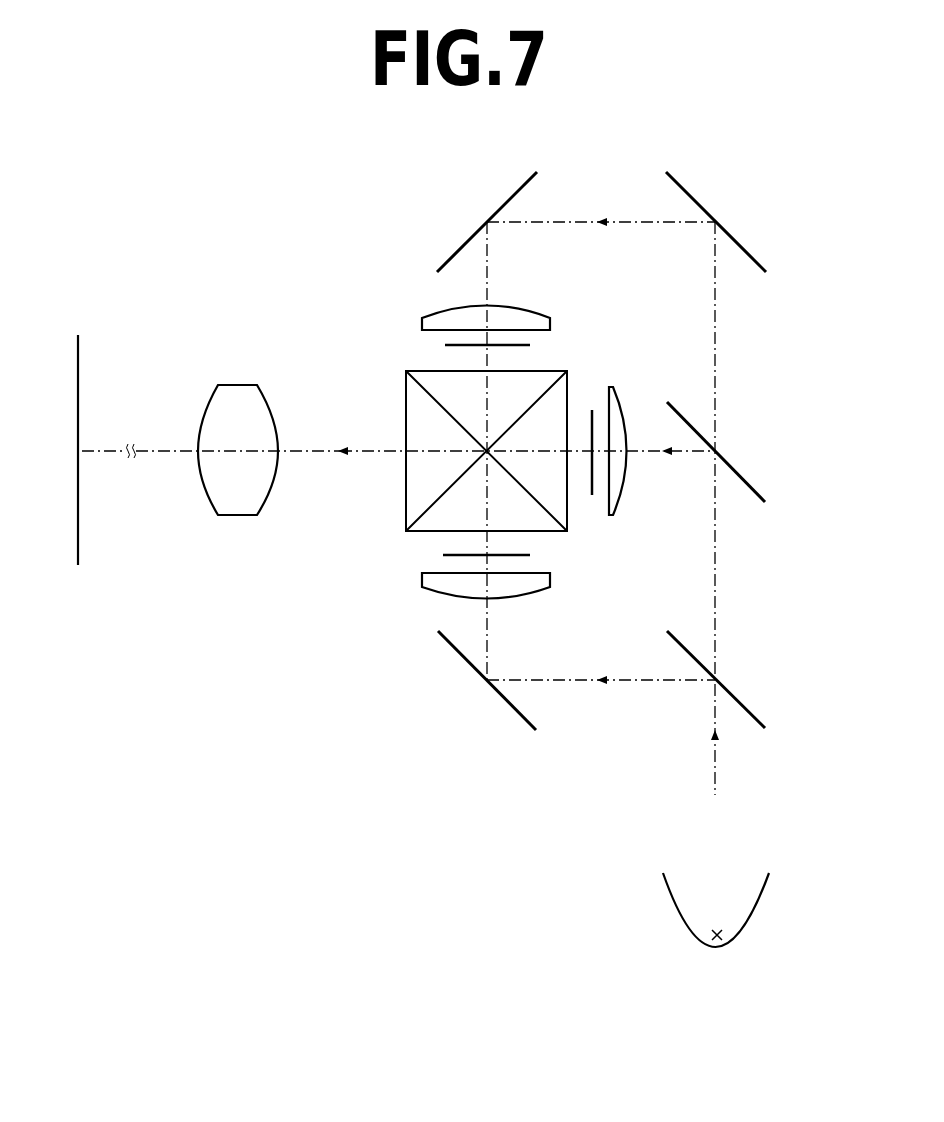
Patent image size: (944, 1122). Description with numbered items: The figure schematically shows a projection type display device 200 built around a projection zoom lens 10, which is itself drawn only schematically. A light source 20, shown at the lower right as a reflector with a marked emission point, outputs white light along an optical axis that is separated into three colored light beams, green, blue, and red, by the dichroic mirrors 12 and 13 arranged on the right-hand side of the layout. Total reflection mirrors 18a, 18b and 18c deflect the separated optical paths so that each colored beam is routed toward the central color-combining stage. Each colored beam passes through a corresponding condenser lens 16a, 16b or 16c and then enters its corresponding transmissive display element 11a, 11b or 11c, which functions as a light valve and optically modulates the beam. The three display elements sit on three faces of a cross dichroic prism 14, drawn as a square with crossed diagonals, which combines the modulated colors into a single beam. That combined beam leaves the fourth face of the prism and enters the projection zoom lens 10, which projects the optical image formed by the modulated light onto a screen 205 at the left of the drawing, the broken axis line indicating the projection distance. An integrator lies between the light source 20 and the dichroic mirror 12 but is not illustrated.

The projection type display device 200 is at (361, 792).
The screen 205 is at (80, 354).
The projection zoom lens 10 is at (237, 383).
The cross dichroic prism 14 is at (412, 484).
The transmissive display element 11a is at (444, 556).
The transmissive display element 11b is at (592, 410).
The transmissive display element 11c is at (445, 347).
The condenser lens 16a is at (523, 598).
The condenser lens 16b is at (631, 489).
The condenser lens 16c is at (521, 307).
The total reflection mirror 18a is at (458, 653).
The total reflection mirror 18b is at (740, 250).
The total reflection mirror 18c is at (467, 257).
The dichroic mirror 12 is at (741, 706).
The dichroic mirror 13 is at (744, 480).
The light source 20 is at (772, 892).